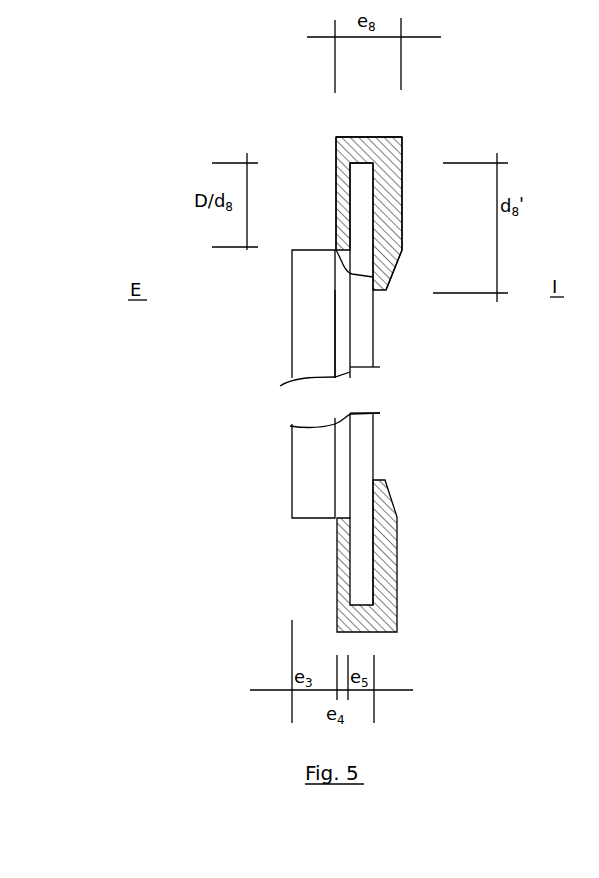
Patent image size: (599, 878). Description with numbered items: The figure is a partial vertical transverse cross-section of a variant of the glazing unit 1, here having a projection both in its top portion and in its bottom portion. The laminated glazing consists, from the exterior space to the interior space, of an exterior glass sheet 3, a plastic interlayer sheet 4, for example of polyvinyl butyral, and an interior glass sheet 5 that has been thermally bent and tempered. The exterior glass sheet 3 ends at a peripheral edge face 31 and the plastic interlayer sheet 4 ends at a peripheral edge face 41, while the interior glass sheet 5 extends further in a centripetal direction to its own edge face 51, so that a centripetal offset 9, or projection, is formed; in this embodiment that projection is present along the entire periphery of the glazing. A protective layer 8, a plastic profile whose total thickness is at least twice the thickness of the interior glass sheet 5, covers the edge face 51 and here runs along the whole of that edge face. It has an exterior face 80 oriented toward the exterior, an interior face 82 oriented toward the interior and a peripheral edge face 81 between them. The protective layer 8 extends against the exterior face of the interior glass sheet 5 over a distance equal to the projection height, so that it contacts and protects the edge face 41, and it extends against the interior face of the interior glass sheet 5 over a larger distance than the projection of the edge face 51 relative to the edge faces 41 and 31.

The glazing unit 1 is at (94, 125).
The centripetal offset 9 is at (292, 127).
The protective layer 8 is at (402, 146).
The peripheral edge face 51 is at (355, 152).
The peripheral edge face 81 is at (371, 160).
The exterior face 80 is at (336, 177).
The interior face 82 is at (402, 168).
The peripheral edge face 31 is at (307, 250).
The peripheral edge face 41 is at (373, 290).
The interior glass sheet 5 is at (366, 351).
The plastic interlayer sheet 4 is at (350, 367).
The exterior glass sheet 3 is at (305, 367).